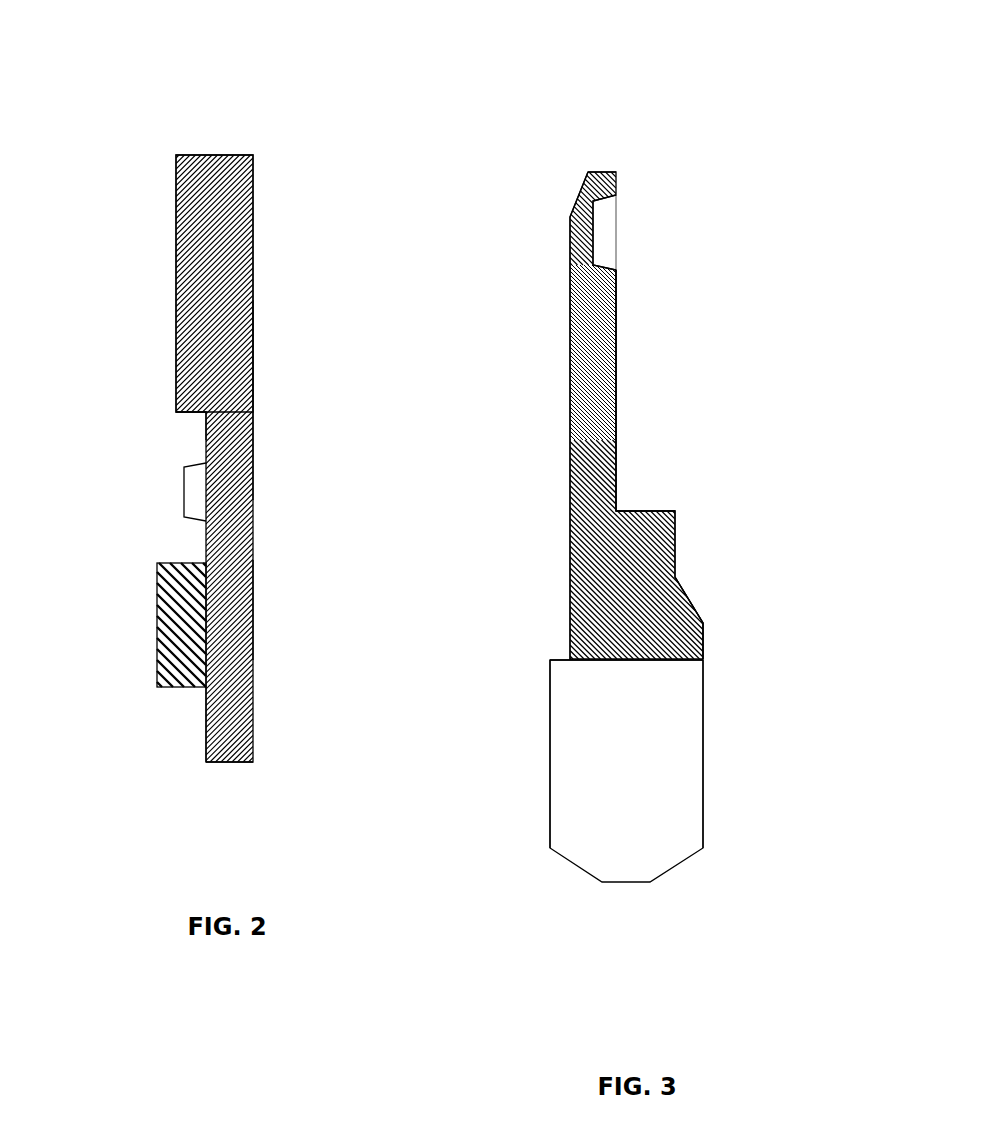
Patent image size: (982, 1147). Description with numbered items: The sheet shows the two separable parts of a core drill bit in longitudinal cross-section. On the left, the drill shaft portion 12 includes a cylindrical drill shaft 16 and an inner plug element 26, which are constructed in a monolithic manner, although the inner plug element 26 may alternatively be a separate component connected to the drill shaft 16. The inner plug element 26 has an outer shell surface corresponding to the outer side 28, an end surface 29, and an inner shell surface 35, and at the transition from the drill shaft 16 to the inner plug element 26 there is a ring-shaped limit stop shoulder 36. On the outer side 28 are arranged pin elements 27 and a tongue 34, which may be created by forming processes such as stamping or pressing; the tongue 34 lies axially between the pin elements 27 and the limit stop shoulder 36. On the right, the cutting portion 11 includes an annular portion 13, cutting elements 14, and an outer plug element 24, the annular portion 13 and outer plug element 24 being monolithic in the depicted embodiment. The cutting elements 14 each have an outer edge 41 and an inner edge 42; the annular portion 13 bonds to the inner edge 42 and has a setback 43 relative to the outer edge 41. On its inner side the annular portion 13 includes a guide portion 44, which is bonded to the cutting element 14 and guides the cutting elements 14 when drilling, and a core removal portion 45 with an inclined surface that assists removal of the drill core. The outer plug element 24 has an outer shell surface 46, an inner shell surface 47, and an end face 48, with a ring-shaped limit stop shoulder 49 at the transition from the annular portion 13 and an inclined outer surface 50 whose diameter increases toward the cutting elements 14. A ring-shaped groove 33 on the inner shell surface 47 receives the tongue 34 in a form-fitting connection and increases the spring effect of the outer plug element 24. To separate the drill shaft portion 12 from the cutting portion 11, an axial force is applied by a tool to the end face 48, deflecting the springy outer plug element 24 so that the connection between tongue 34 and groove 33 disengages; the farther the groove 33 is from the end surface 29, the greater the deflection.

In FIG. 2, the drill shaft portion 12 is at (215, 120).
In FIG. 2, the drill shaft 16 is at (206, 216).
In FIG. 2, the limit stop shoulder 36 is at (190, 423).
In FIG. 2, the tongue 34 is at (193, 490).
In FIG. 2, the pin elements 27 is at (175, 622).
In FIG. 2, the inner shell surface 35 is at (254, 609).
In FIG. 2, the outer side 28 is at (206, 725).
In FIG. 2, the end surface 29 is at (228, 764).
In FIG. 2, the inner plug element 26 is at (296, 448).
In FIG. 3, the cutting portion 11 is at (663, 123).
In FIG. 3, the end face 48 is at (598, 170).
In FIG. 3, the inclined outer surface 50 is at (577, 200).
In FIG. 3, the groove 33 is at (602, 228).
In FIG. 3, the outer plug element 24 is at (735, 273).
In FIG. 3, the outer shell surface 46 is at (570, 363).
In FIG. 3, the inner shell surface 47 is at (618, 352).
In FIG. 3, the limit stop shoulder 49 is at (640, 509).
In FIG. 3, the annular portion 13 is at (600, 543).
In FIG. 3, the core removal portion 45 is at (686, 592).
In FIG. 3, the guide portion 44 is at (706, 643).
In FIG. 3, the setback 43 is at (555, 652).
In FIG. 3, the cutting elements 14 is at (628, 848).
In FIG. 3, the outer edge 41 is at (549, 765).
In FIG. 3, the inner edge 42 is at (705, 735).